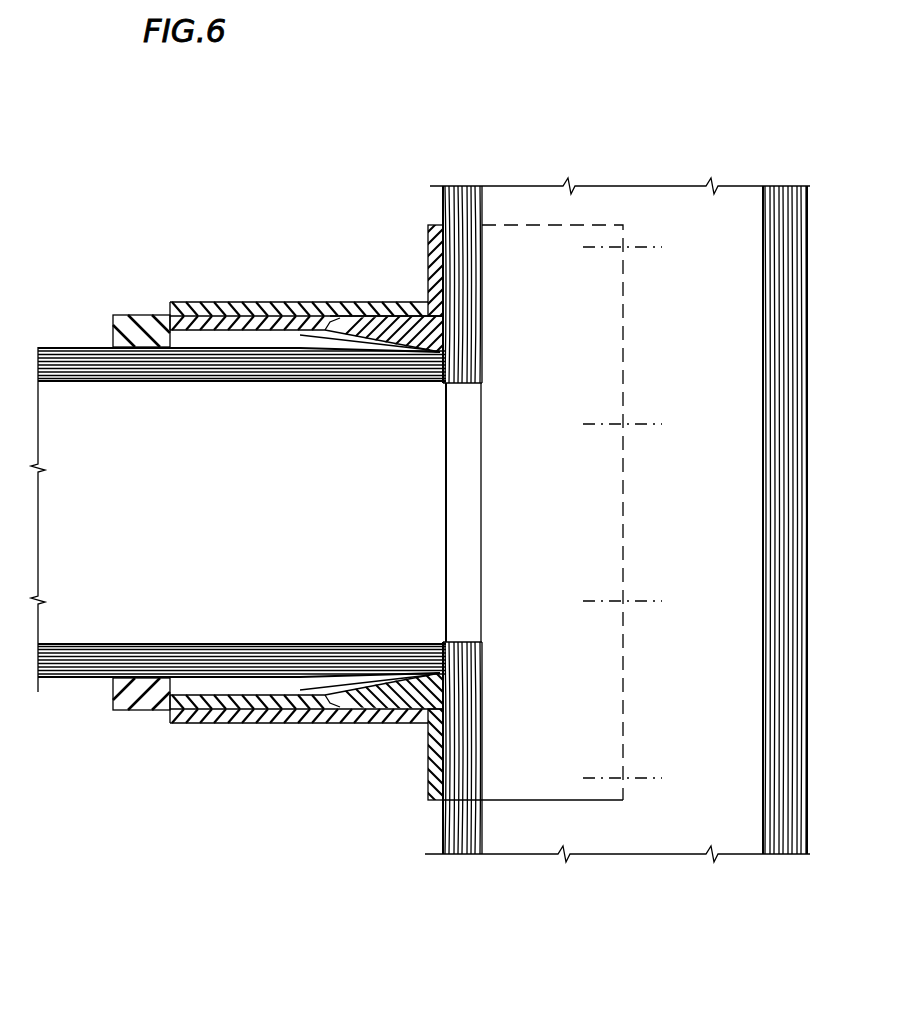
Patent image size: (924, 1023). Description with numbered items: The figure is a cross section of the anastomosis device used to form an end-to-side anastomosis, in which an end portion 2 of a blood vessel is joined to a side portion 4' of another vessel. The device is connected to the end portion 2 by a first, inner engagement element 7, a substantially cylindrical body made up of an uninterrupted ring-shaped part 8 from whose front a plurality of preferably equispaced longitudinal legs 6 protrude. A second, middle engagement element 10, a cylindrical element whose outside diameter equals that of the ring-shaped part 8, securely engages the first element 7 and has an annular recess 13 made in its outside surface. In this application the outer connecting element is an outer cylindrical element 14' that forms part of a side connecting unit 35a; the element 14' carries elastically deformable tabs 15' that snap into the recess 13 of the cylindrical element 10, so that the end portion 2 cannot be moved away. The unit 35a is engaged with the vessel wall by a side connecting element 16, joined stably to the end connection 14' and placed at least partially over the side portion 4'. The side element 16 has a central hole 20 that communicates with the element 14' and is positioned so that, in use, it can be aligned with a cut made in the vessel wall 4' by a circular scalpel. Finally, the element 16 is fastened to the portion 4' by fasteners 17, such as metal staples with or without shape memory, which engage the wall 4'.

The end portion 2 is at (424, 372).
The side portion of the vessel 4' is at (498, 520).
The longitudinal legs 6 is at (318, 347).
The first engagement element 7 is at (100, 320).
The ring-shaped part 8 is at (140, 318).
The second engagement element 10 is at (386, 326).
The annular recess 13 is at (340, 318).
The outer cylindrical element 14' is at (306, 463).
The elastically deformable tabs 15' is at (315, 519).
The side connecting element 16 is at (428, 252).
The fasteners 17 is at (637, 424).
The central hole 20 is at (457, 537).
The side connecting unit 35a is at (396, 774).